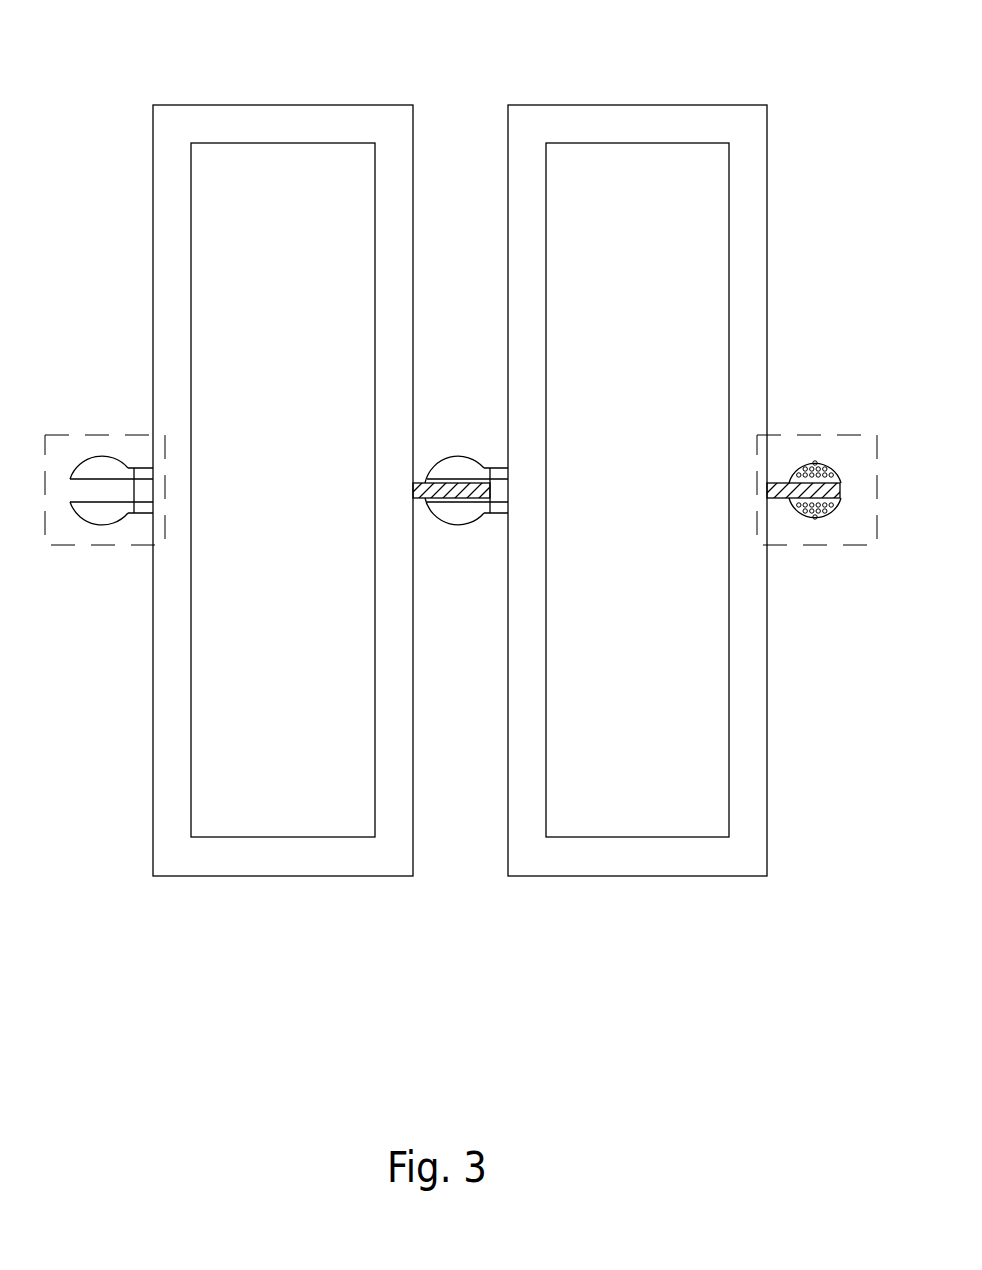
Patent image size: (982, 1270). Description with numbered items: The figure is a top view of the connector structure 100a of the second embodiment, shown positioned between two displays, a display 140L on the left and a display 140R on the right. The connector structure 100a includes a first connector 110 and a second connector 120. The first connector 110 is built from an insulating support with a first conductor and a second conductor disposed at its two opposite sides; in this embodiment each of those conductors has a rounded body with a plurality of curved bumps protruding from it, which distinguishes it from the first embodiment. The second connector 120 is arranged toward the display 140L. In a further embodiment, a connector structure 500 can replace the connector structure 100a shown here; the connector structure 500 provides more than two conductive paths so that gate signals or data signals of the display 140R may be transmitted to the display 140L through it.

The display 140L is at (268, 180).
The display 140R is at (637, 180).
The second connector 120 is at (101, 435).
The first connector 110 is at (817, 435).
The connector structure 100a is at (455, 443).
The connector structure 500 is at (456, 490).